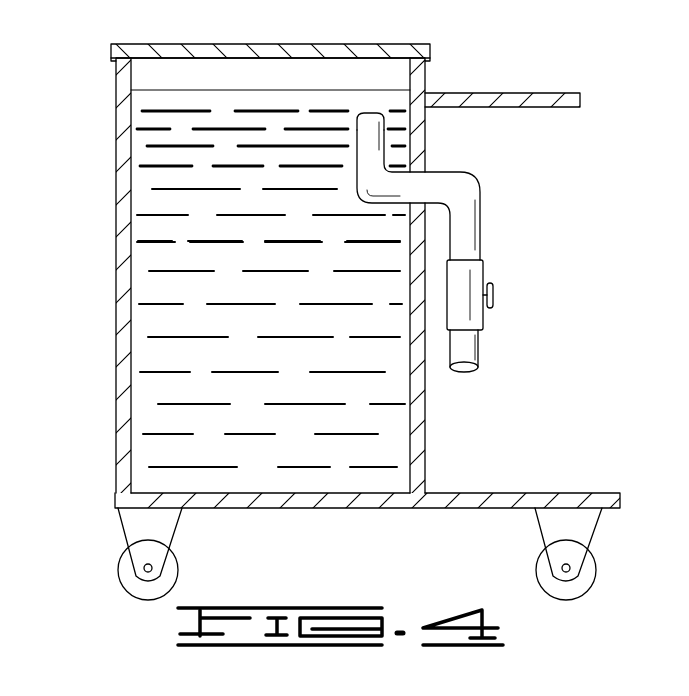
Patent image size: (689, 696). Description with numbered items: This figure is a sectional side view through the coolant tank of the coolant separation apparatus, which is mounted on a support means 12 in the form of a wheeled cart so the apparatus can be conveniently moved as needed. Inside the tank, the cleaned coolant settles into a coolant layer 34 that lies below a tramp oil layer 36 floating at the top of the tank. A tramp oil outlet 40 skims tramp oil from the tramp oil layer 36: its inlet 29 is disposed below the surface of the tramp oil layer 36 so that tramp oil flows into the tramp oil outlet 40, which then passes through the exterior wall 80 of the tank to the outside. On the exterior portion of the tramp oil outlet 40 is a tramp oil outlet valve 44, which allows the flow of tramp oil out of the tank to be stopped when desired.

The support means 12 is at (510, 494).
The inlet 29 is at (363, 113).
The coolant layer 34 is at (142, 207).
The tramp oil layer 36 is at (153, 99).
The tramp oil outlet 40 is at (481, 201).
The tramp oil outlet valve 44 is at (493, 291).
The exterior wall 80 is at (120, 308).